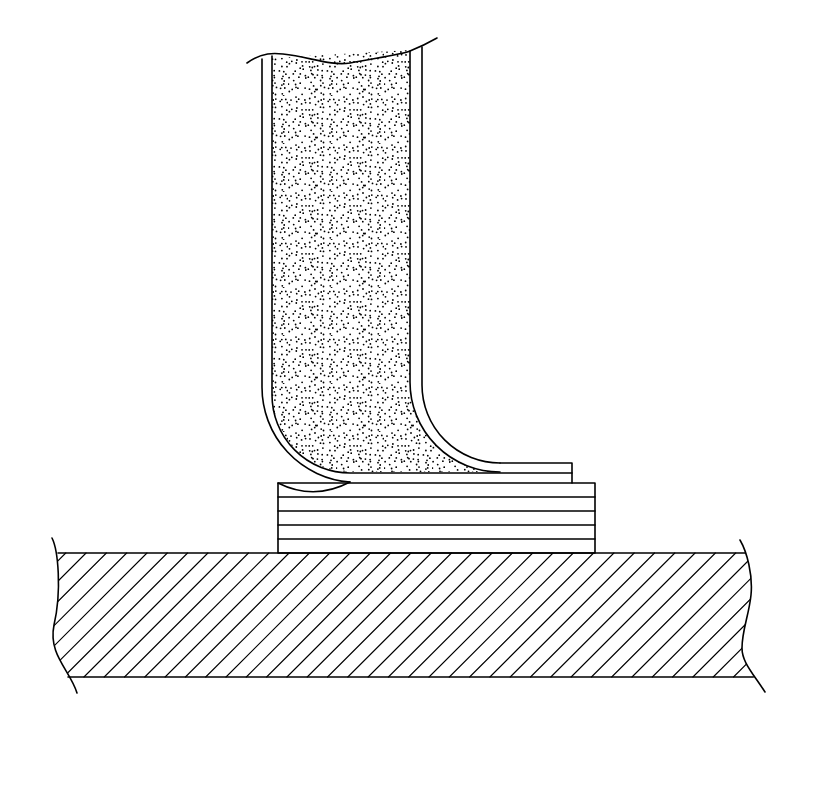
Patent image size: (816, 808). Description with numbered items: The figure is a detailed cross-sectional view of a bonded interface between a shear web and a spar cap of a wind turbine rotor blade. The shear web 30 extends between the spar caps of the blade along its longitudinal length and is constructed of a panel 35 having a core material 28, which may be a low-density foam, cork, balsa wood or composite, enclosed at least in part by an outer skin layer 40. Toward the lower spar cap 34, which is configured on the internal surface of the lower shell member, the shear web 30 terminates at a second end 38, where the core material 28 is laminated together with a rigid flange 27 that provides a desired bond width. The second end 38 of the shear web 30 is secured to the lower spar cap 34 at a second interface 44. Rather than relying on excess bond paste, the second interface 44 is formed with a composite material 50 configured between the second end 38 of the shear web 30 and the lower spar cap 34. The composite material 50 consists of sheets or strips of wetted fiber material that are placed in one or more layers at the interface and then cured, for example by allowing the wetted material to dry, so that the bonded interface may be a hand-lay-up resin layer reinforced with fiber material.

The second interface 44 is at (100, 410).
The shear web 30 is at (424, 178).
The outer skin layer 40 is at (262, 289).
The core material 28 is at (353, 272).
The panel 35 is at (412, 313).
The rigid flange 27 is at (516, 463).
The second end 38 is at (277, 481).
The composite material 50 is at (597, 483).
The lower spar cap 34 is at (112, 553).